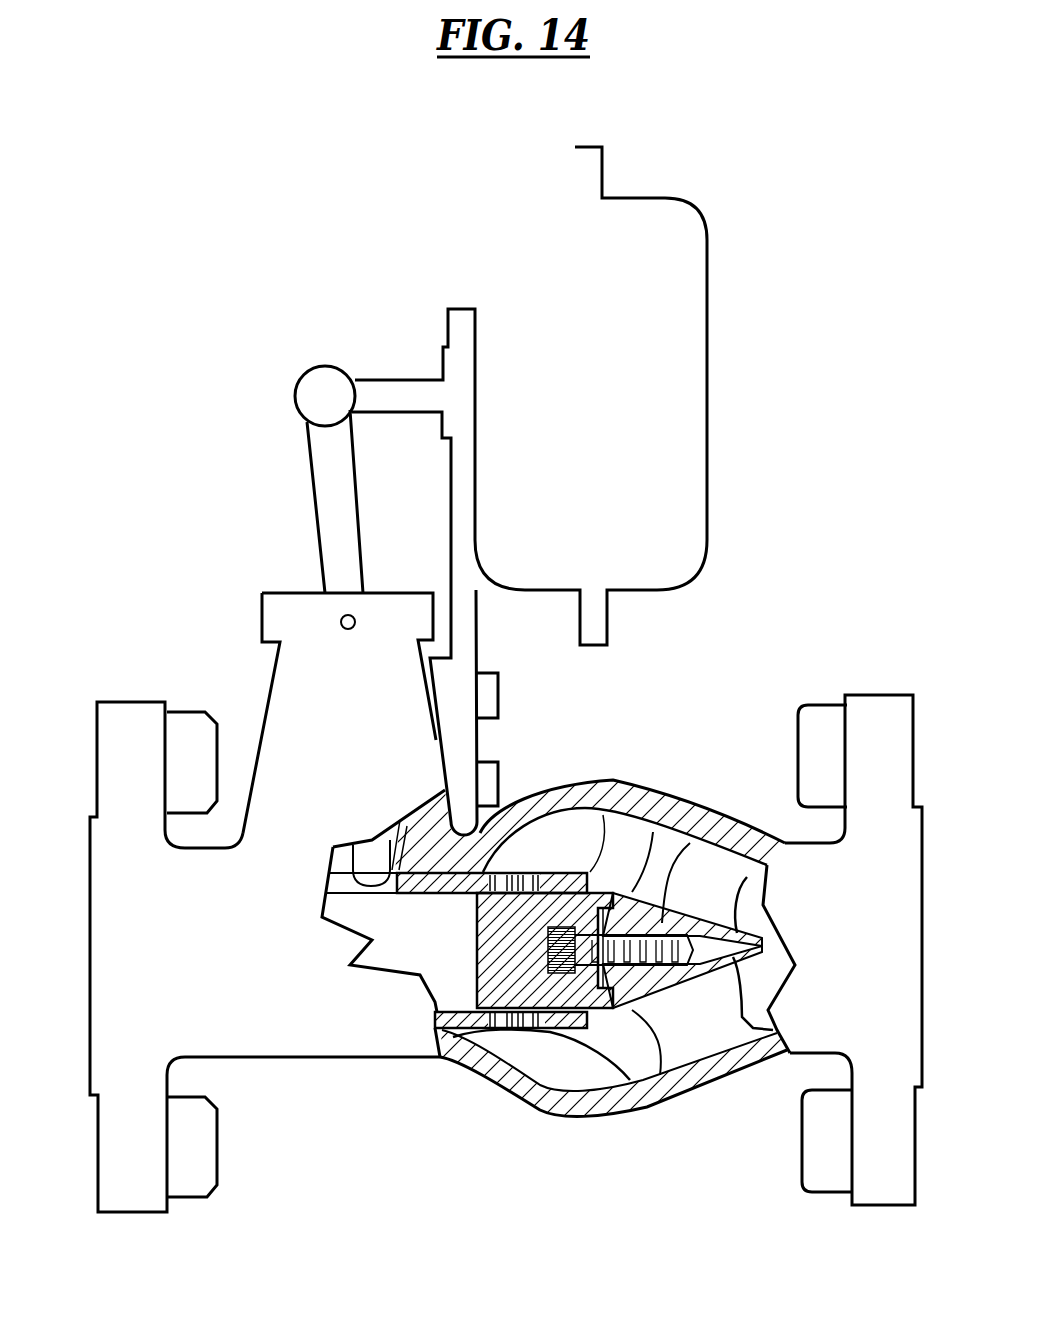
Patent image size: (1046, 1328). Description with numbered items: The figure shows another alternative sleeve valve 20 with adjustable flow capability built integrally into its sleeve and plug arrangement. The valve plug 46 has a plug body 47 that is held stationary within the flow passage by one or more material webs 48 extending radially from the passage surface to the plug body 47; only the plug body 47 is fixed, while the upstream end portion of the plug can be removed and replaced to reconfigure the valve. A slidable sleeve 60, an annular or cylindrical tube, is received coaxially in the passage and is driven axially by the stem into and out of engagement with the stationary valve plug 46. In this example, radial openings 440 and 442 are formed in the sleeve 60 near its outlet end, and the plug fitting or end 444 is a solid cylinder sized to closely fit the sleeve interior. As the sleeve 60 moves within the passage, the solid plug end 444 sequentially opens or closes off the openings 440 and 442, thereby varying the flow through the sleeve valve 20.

The sleeve valve 20 is at (798, 382).
The valve plug 46 is at (633, 833).
The plug body 47 is at (707, 872).
The material webs 48 is at (719, 900).
The slidable sleeve 60 is at (467, 1055).
The radial opening 440 is at (517, 871).
The radial opening 442 is at (497, 870).
The plug fitting 444 is at (610, 880).